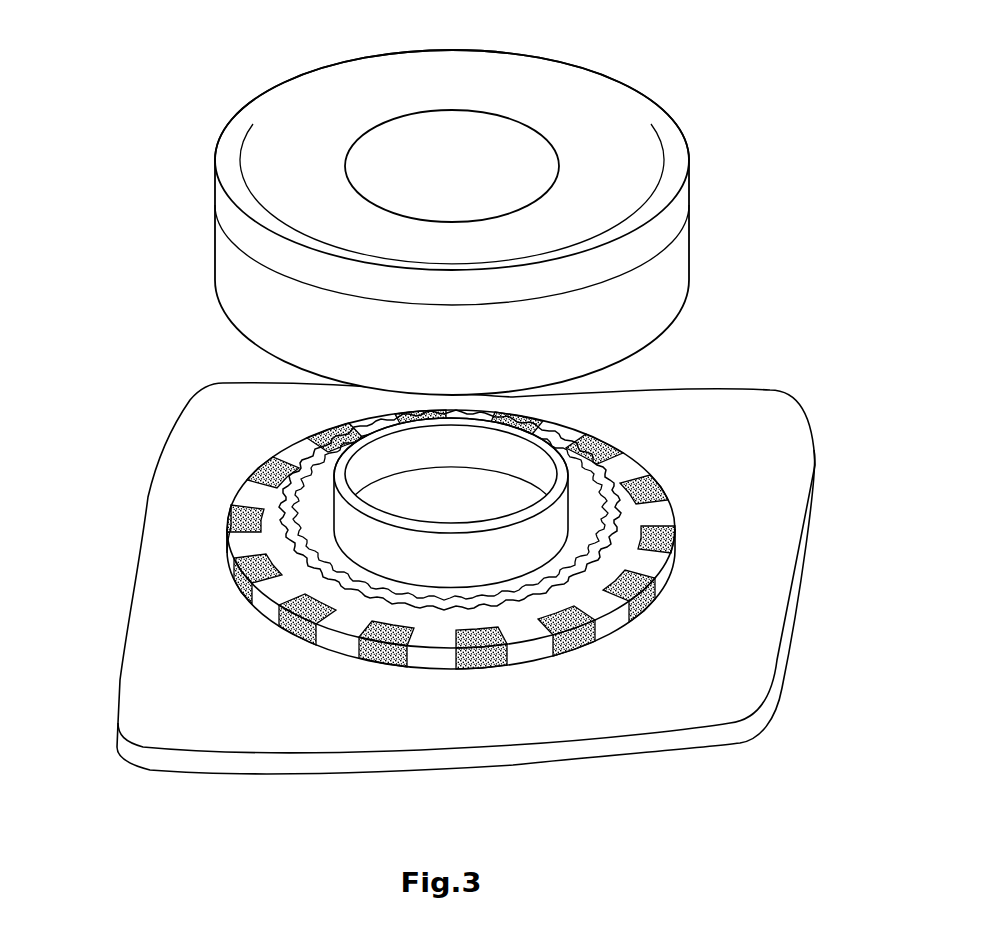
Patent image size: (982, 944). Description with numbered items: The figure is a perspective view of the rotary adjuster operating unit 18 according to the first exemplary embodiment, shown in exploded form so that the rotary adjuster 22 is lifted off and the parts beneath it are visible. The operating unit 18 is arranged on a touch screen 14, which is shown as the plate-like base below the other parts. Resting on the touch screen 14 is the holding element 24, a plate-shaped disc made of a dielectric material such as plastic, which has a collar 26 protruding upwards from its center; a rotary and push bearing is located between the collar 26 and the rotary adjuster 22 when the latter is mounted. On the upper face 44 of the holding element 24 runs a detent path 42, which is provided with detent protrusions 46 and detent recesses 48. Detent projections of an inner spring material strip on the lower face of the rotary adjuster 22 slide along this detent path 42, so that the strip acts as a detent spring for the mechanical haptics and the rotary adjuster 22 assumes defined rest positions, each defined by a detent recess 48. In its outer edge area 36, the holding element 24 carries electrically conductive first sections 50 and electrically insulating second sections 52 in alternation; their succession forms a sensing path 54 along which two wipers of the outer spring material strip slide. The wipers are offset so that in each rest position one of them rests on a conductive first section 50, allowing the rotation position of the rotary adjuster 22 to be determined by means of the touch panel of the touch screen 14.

The touch screen 14 is at (723, 670).
The operating unit 18 is at (140, 300).
The rotary adjuster 22 is at (305, 113).
The holding element 24 is at (412, 569).
The collar 26 is at (545, 532).
The outer edge area 36 is at (640, 648).
The detent path 42 is at (330, 554).
The upper face 44 is at (255, 544).
The detent protrusions 46 is at (333, 578).
The detent recesses 48 is at (380, 600).
The electrically conductive first sections 50 is at (578, 647).
The electrically insulating second sections 52 is at (527, 652).
The sensing path 54 is at (655, 505).